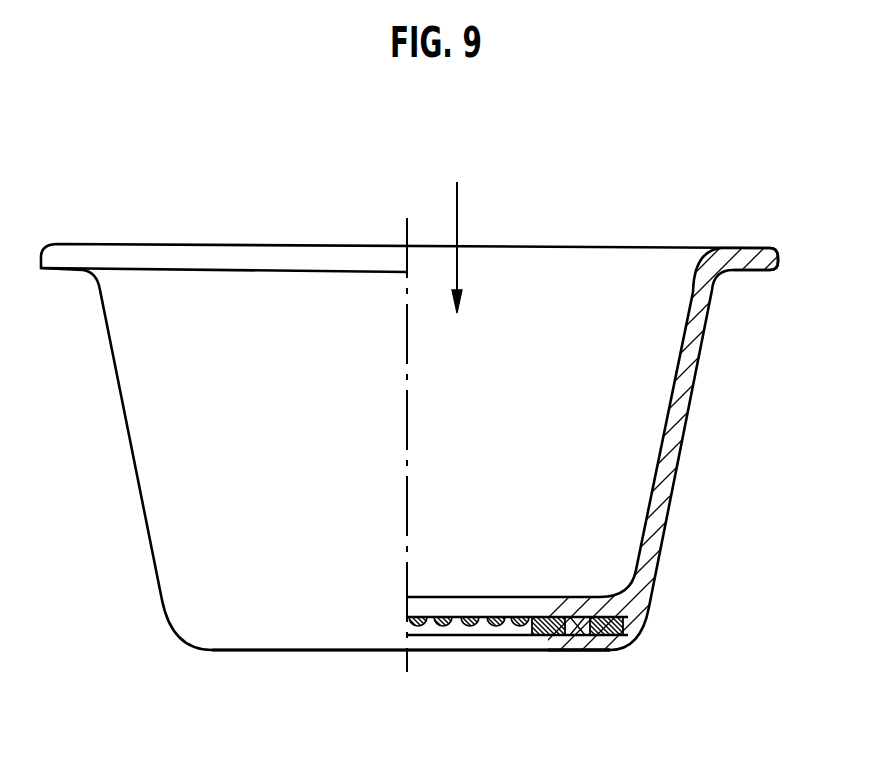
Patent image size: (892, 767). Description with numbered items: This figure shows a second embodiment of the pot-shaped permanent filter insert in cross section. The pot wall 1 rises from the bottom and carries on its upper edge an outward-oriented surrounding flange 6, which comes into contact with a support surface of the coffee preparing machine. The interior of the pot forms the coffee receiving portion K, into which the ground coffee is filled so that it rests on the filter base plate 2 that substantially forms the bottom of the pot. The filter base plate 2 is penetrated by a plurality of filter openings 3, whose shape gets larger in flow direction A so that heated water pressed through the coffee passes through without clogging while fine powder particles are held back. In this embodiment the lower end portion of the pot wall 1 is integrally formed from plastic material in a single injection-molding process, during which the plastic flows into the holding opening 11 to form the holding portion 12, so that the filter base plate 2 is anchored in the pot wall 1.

The pot wall 1 is at (683, 456).
The filter base plate 2 is at (419, 637).
The filter openings 3 is at (458, 638).
The flange 6 is at (750, 248).
The holding opening 11 is at (573, 650).
The holding portion 12 is at (590, 658).
The coffee receiving portion K is at (574, 270).
The flow direction A is at (457, 232).